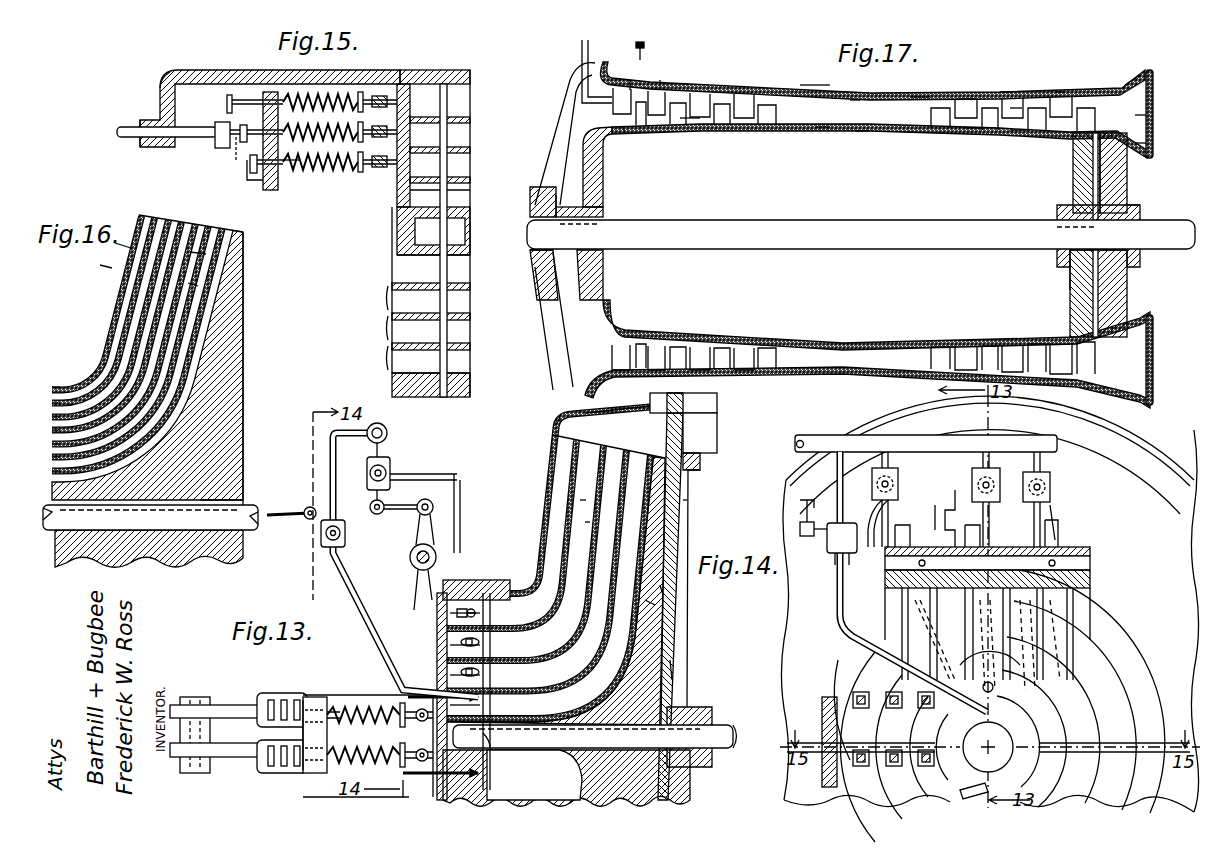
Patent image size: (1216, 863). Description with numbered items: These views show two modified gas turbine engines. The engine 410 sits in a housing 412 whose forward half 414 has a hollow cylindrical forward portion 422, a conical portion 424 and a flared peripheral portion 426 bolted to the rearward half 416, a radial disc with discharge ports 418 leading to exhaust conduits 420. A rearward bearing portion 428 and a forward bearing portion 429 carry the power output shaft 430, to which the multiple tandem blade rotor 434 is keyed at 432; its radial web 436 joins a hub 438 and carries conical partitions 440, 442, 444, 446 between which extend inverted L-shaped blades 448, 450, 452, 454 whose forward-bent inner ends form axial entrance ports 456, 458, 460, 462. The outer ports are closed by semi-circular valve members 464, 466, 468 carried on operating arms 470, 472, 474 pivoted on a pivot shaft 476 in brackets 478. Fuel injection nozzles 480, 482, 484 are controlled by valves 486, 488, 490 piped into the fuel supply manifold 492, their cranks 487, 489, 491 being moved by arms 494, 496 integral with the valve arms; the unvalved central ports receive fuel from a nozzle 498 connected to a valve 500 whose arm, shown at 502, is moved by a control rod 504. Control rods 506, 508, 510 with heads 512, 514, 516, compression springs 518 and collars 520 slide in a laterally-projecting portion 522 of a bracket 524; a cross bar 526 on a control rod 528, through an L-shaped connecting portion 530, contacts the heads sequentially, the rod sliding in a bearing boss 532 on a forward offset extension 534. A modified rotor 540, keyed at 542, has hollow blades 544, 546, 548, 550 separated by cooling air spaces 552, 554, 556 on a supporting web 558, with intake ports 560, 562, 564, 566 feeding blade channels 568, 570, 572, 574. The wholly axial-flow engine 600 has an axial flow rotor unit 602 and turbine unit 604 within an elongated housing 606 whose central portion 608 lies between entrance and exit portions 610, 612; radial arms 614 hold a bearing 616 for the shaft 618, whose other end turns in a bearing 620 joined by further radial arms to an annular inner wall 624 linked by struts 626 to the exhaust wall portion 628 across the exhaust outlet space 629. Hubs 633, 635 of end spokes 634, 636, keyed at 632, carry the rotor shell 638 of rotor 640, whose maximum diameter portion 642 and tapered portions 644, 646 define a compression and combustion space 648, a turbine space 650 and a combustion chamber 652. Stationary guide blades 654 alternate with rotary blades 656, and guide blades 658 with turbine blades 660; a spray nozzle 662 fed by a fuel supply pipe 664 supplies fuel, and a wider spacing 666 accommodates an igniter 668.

In FIG. 15, the gas turbine engine 410 is at (466, 68).
In FIG. 13, the gas turbine engine 410 is at (470, 461).
In FIG. 17, the housing 412 is at (876, 325).
In FIG. 13, the housing 412 is at (695, 397).
In FIG. 13, the forward housing half 414 is at (556, 420).
In FIG. 13, the rearward housing half 416 is at (684, 505).
In FIG. 13, the discharge ports 418 is at (717, 438).
In FIG. 13, the exhaust conduits 420 is at (717, 408).
In FIG. 15, the hollow cylindrical forward portion 422 is at (391, 385).
In FIG. 13, the hollow cylindrical forward portion 422 is at (442, 587).
In FIG. 14, the hollow cylindrical forward portion 422 is at (842, 665).
In FIG. 13, the conical portion 424 is at (550, 448).
In FIG. 17, the flared peripheral portion 426 is at (869, 361).
In FIG. 13, the flared peripheral portion 426 is at (620, 411).
In FIG. 13, the rearward central shaft bearing portion 428 is at (705, 710).
In FIG. 13, the forward central shaft bearing portion 429 is at (593, 736).
In FIG. 15, the power output shaft 430 is at (464, 239).
In FIG. 16, the power output shaft 430 is at (247, 532).
In FIG. 13, the power output shaft 430 is at (722, 730).
In FIG. 14, the power output shaft 430 is at (1000, 757).
In FIG. 13, the keying location 432 is at (672, 680).
In FIG. 13, the multiple tandem blade rotor 434 is at (678, 644).
In FIG. 13, the radial web 436 is at (655, 605).
In FIG. 15, the hub 438 is at (470, 253).
In FIG. 13, the hub 438 is at (512, 768).
In FIG. 15, the conical partition 440 is at (470, 376).
In FIG. 13, the conical partition 440 is at (600, 510).
In FIG. 15, the conical partition 442 is at (470, 347).
In FIG. 13, the conical partition 442 is at (580, 500).
In FIG. 15, the conical partition 444 is at (470, 317).
In FIG. 13, the conical partition 444 is at (562, 490).
In FIG. 15, the conical partition 446 is at (470, 287).
In FIG. 13, the conical partition 446 is at (684, 512).
In FIG. 13, the multiple blade 448 is at (585, 522).
In FIG. 13, the multiple blade 450 is at (600, 545).
In FIG. 13, the multiple blade 452 is at (615, 563).
In FIG. 13, the innermost multiple blade 454 is at (662, 590).
In FIG. 15, the axial entrance port 456 is at (463, 111).
In FIG. 13, the axial entrance port 456 is at (493, 615).
In FIG. 15, the axial entrance port 458 is at (463, 141).
In FIG. 13, the axial entrance port 458 is at (493, 643).
In FIG. 15, the axial entrance port 460 is at (463, 167).
In FIG. 13, the axial entrance port 460 is at (493, 673).
In FIG. 15, the central unvalved port 462 is at (463, 191).
In FIG. 13, the central unvalved port 462 is at (493, 702).
In FIG. 15, the semi-circular valve member 464 is at (386, 357).
In FIG. 14, the semi-circular valve member 464 is at (1095, 660).
In FIG. 15, the semi-circular valve member 466 is at (386, 328).
In FIG. 14, the semi-circular valve member 466 is at (1073, 680).
In FIG. 15, the semi-circular valve member 468 is at (386, 298).
In FIG. 14, the semi-circular valve member 468 is at (1050, 700).
In FIG. 14, the operating arm 470 is at (900, 605).
In FIG. 14, the operating arm 472 is at (935, 640).
In FIG. 14, the operating arm 474 is at (1005, 668).
In FIG. 13, the pivot shaft 476 is at (410, 556).
In FIG. 14, the pivot shaft 476 is at (1092, 562).
In FIG. 13, the brackets 478 is at (444, 514).
In FIG. 14, the brackets 478 is at (884, 565).
In FIG. 13, the fuel injection nozzle 480 is at (437, 660).
In FIG. 14, the fuel injection nozzle 480 is at (1050, 540).
In FIG. 13, the fuel injection nozzle 482 is at (460, 642).
In FIG. 14, the fuel injection nozzle 482 is at (948, 488).
In FIG. 13, the fuel injection nozzle 484 is at (456, 614).
In FIG. 14, the fuel injection nozzle 484 is at (855, 544).
In FIG. 14, the valve 486 is at (1051, 485).
In FIG. 14, the valve operating crank 487 is at (1056, 510).
In FIG. 14, the valve 488 is at (1000, 482).
In FIG. 14, the valve operating crank 489 is at (934, 509).
In FIG. 13, the valve 490 is at (391, 470).
In FIG. 14, the valve 490 is at (898, 482).
In FIG. 13, the valve operating crank 491 is at (370, 505).
In FIG. 14, the valve operating crank 491 is at (880, 503).
In FIG. 13, the fuel supply manifold 492 is at (388, 436).
In FIG. 14, the fuel supply manifold 492 is at (827, 434).
In FIG. 14, the arm 494 is at (969, 536).
In FIG. 13, the arm 496 is at (413, 534).
In FIG. 14, the arm 496 is at (907, 534).
In FIG. 13, the nozzle 498 is at (419, 611).
In FIG. 14, the nozzle 498 is at (836, 600).
In FIG. 13, the valve 500 is at (333, 533).
In FIG. 14, the valve 500 is at (826, 545).
In FIG. 13, the pivot 502 is at (308, 519).
In FIG. 14, the pivot 502 is at (803, 530).
In FIG. 13, the control rod 504 is at (290, 512).
In FIG. 14, the control rod 504 is at (814, 498).
In FIG. 15, the control rod 506 is at (328, 96).
In FIG. 14, the control rod 506 is at (862, 721).
In FIG. 15, the control rod 508 is at (326, 111).
In FIG. 14, the control rod 508 is at (898, 721).
In FIG. 15, the control rod 510 is at (341, 170).
In FIG. 13, the control rod 510 is at (349, 703).
In FIG. 14, the control rod 510 is at (935, 692).
In FIG. 15, the head 512 is at (226, 101).
In FIG. 13, the head 512 is at (270, 699).
In FIG. 15, the head 514 is at (238, 142).
In FIG. 13, the head 514 is at (284, 697).
In FIG. 15, the head 516 is at (249, 167).
In FIG. 13, the head 516 is at (297, 697).
In FIG. 15, the compression spring 518 is at (320, 172).
In FIG. 13, the compression spring 518 is at (362, 726).
In FIG. 15, the collar 520 is at (362, 180).
In FIG. 13, the collar 520 is at (402, 704).
In FIG. 15, the laterally-projecting portion 522 is at (270, 191).
In FIG. 13, the laterally-projecting portion 522 is at (318, 775).
In FIG. 15, the bracket 524 is at (236, 59).
In FIG. 13, the bracket 524 is at (362, 696).
In FIG. 14, the bracket 524 is at (822, 703).
In FIG. 15, the cross bar 526 is at (258, 184).
In FIG. 13, the cross bar 526 is at (330, 688).
In FIG. 15, the control rod 528 is at (116, 132).
In FIG. 13, the control rod 528 is at (222, 704).
In FIG. 15, the L-shaped connecting portion 530 is at (216, 130).
In FIG. 15, the bearing boss 532 is at (157, 120).
In FIG. 13, the bearing boss 532 is at (190, 697).
In FIG. 15, the forward offset extension 534 is at (160, 92).
In FIG. 16, the modified rotor 540 is at (254, 322).
In FIG. 16, the keying location 542 is at (222, 495).
In FIG. 16, the hollow blade 544 is at (142, 216).
In FIG. 16, the hollow blade 546 is at (175, 220).
In FIG. 16, the hollow blade 548 is at (205, 226).
In FIG. 16, the hollow blade 550 is at (226, 231).
In FIG. 16, the cooling air space 552 is at (56, 404).
In FIG. 16, the cooling air space 554 is at (56, 431).
In FIG. 16, the cooling air space 556 is at (56, 458).
In FIG. 16, the supporting web 558 is at (228, 390).
In FIG. 16, the intake port 560 is at (56, 389).
In FIG. 16, the intake port 562 is at (100, 418).
In FIG. 16, the intake port 564 is at (100, 455).
In FIG. 16, the intake port 566 is at (56, 472).
In FIG. 16, the blade channel 568 is at (94, 263).
In FIG. 16, the blade channel 570 is at (109, 244).
In FIG. 16, the blade channel 572 is at (206, 254).
In FIG. 16, the blade channel 574 is at (198, 286).
In FIG. 17, the gas turbine engine 600 is at (819, 77).
In FIG. 17, the axial flow rotor unit 602 is at (684, 80).
In FIG. 17, the turbine unit 604 is at (1010, 82).
In FIG. 17, the elongated housing 606 is at (922, 95).
In FIG. 17, the central portion 608 is at (856, 99).
In FIG. 17, the entrance portion 610 is at (664, 78).
In FIG. 17, the exit portion 612 is at (1062, 90).
In FIG. 17, the radial arms 614 is at (548, 152).
In FIG. 17, the central shaft bearing 616 is at (529, 206).
In FIG. 17, the power output shaft 618 is at (527, 235).
In FIG. 17, the central shaft bearing 620 is at (1140, 210).
In FIG. 17, the annular inner wall 624 is at (1152, 145).
In FIG. 17, the struts 626 is at (1152, 113).
In FIG. 17, the exhaust wall portion 628 is at (1130, 80).
In FIG. 17, the exhaust outlet space 629 is at (1154, 88).
In FIG. 17, the keying location 632 is at (1057, 215).
In FIG. 17, the hub 633 is at (553, 180).
In FIG. 17, the end spoke 634 is at (598, 185).
In FIG. 17, the hub 635 is at (1068, 262).
In FIG. 17, the end spoke 636 is at (1073, 182).
In FIG. 17, the rotor shell 638 is at (909, 138).
In FIG. 17, the rotor 640 is at (582, 140).
In FIG. 17, the central maximum diameter portion 642 is at (863, 134).
In FIG. 17, the forward portion 644 is at (690, 135).
In FIG. 17, the rearward portion 646 is at (1018, 136).
In FIG. 17, the compression and combustion space 648 is at (632, 78).
In FIG. 17, the turbine space 650 is at (1020, 100).
In FIG. 17, the combustion chamber 652 is at (820, 132).
In FIG. 17, the stationary guide blades 654 is at (603, 77).
In FIG. 17, the rotary blades 656 is at (653, 128).
In FIG. 17, the stationary guide blades 658 is at (966, 97).
In FIG. 17, the turbine blades 660 is at (971, 132).
In FIG. 17, the spray nozzle 662 is at (565, 95).
In FIG. 17, the fuel supply pipe 664 is at (582, 52).
In FIG. 17, the spacing 666 is at (623, 135).
In FIG. 17, the igniter 668 is at (642, 40).